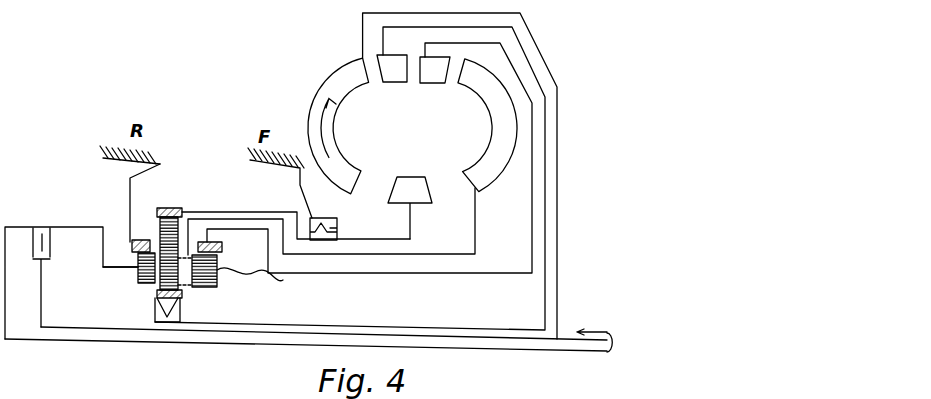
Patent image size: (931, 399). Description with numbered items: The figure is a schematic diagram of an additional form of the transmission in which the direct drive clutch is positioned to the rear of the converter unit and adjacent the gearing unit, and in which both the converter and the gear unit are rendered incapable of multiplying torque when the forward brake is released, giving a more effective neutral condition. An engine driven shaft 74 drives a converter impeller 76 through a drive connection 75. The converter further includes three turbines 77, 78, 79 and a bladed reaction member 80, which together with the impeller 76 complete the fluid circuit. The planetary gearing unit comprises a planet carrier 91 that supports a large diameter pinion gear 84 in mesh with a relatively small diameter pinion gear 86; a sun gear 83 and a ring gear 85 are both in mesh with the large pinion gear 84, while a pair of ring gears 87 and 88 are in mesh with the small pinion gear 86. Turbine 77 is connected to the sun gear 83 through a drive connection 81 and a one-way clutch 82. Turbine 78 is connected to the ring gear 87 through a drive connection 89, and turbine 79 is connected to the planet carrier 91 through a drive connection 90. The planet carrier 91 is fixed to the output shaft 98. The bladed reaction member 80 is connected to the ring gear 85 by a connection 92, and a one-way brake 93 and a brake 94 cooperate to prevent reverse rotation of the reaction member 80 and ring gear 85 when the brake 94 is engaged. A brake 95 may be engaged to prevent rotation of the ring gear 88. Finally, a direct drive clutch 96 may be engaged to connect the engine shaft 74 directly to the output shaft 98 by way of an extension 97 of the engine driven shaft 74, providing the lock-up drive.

The engine driven shaft 74 is at (560, 340).
The drive connection 75 is at (557, 183).
The converter impeller 76 is at (341, 97).
The turbine 77 is at (390, 77).
The turbine 78 is at (432, 80).
The turbine 79 is at (492, 118).
The reaction member 80 is at (405, 181).
The drive connection 81 is at (372, 324).
The one-way clutch 82 is at (183, 313).
The sun gear 83 is at (156, 306).
The large diameter pinion gear 84 is at (158, 226).
The ring gear 85 is at (178, 207).
The small diameter pinion gear 86 is at (217, 282).
The ring gear 87 is at (222, 247).
The ring gear 88 is at (132, 242).
The drive connection 89 is at (447, 274).
The drive connection 90 is at (420, 254).
The planet carrier 91 is at (102, 266).
The connection 92 is at (376, 228).
The one-way brake 93 is at (336, 232).
The brake 94 is at (277, 170).
The brake 95 is at (162, 163).
The direct drive clutch 96 is at (65, 238).
The extension 97 is at (76, 327).
The output shaft 98 is at (497, 350).